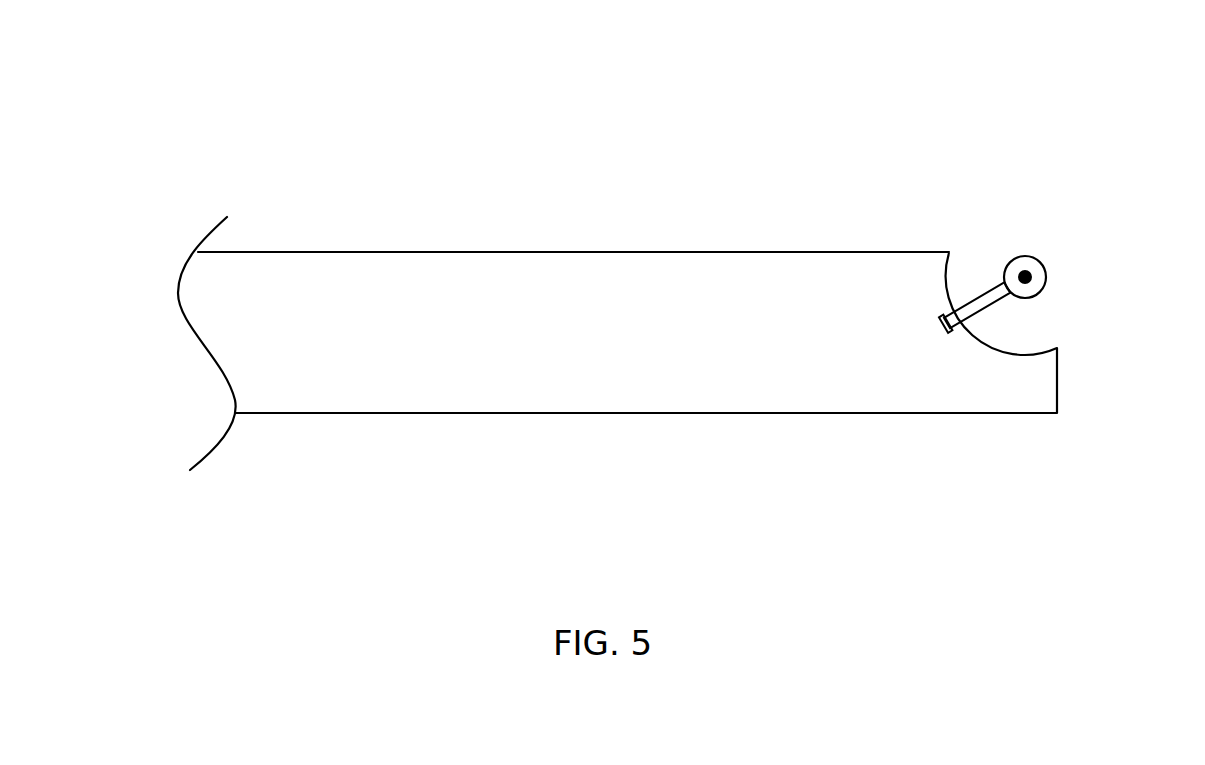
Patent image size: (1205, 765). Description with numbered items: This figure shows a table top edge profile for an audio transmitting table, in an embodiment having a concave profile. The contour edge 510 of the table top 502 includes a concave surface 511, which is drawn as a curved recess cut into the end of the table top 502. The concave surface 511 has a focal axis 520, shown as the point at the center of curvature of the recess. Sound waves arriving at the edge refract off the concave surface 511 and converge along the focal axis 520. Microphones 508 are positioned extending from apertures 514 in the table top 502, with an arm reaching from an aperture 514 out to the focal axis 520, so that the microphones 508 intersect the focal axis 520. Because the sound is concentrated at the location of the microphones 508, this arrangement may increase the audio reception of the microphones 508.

The table top 502 is at (607, 357).
The microphones 508 is at (1018, 256).
The contour edge 510 is at (969, 193).
The concave surface 511 is at (1016, 342).
The apertures 514 is at (945, 316).
The focal axis 520 is at (1029, 275).